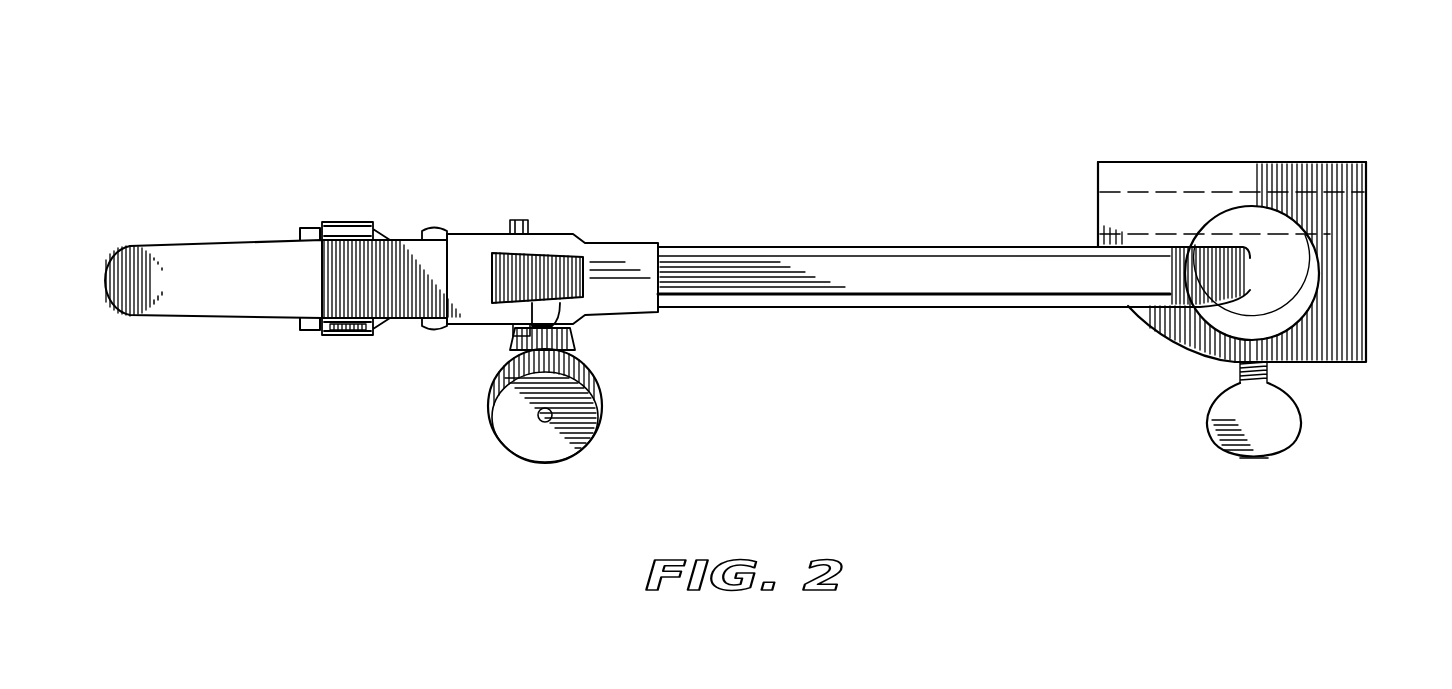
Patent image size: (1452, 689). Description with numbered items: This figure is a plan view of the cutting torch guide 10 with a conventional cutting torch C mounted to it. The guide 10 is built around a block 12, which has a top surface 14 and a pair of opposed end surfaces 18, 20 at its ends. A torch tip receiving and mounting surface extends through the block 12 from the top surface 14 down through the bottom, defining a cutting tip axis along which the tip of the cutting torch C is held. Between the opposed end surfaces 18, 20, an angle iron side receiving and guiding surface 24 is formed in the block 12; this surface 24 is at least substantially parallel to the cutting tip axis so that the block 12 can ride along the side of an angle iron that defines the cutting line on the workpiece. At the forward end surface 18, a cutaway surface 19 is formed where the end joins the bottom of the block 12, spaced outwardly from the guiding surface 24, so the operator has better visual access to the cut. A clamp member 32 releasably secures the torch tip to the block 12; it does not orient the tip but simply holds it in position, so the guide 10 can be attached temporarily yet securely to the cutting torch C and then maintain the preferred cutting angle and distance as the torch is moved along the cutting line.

The cutting torch guide 10 is at (1052, 112).
The block 12 is at (1233, 152).
The top surface 14 is at (1173, 165).
The end surface 18 is at (1097, 173).
The end surface 20 is at (1365, 174).
The angle iron side receiving and guiding surface 24 is at (1112, 222).
The cutaway surface 19 is at (1155, 332).
The clamp member 32 is at (1288, 418).
The cutting torch C is at (934, 312).